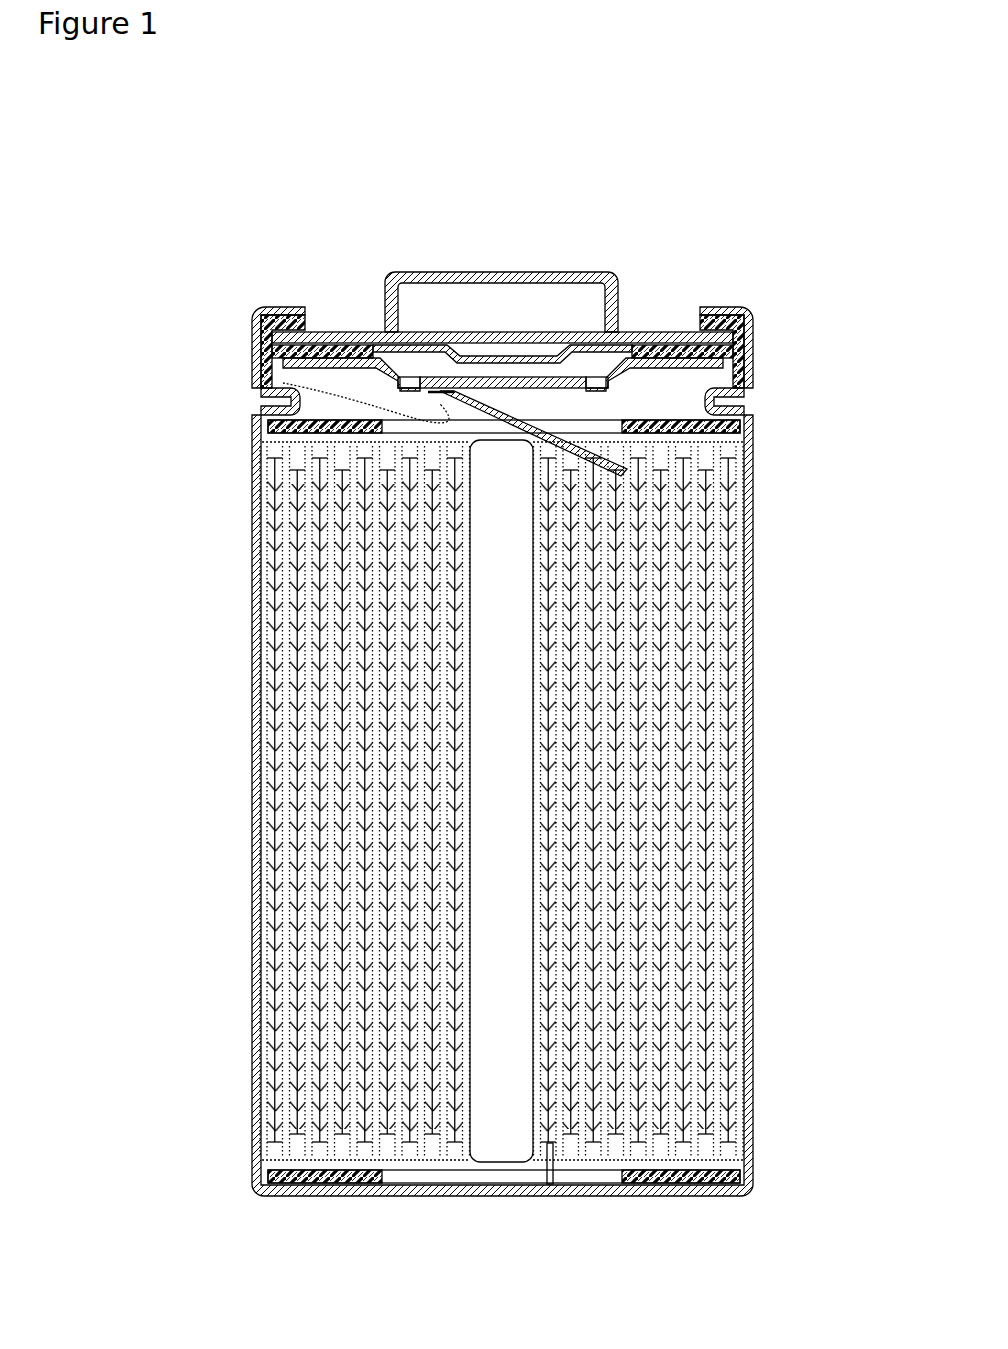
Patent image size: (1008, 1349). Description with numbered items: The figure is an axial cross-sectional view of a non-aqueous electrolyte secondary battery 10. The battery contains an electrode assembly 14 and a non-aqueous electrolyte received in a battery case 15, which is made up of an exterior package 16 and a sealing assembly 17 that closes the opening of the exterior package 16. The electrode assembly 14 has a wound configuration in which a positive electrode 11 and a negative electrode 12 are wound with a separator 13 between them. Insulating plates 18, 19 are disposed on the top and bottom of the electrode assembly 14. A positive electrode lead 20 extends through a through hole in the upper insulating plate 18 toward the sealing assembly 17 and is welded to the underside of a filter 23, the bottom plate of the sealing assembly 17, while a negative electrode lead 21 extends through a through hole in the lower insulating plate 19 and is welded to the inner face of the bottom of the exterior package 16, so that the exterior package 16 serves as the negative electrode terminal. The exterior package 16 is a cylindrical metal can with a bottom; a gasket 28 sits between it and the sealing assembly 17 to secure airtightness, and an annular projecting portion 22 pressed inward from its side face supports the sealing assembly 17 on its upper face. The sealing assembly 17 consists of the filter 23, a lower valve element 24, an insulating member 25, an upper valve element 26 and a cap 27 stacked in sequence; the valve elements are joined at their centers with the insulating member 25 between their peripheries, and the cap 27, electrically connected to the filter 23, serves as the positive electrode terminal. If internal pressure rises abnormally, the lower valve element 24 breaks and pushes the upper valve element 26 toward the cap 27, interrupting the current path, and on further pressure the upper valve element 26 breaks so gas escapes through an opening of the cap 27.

The non-aqueous electrolyte secondary battery 10 is at (762, 306).
The positive electrode 11 is at (745, 870).
The negative electrode 12 is at (745, 900).
The separator 13 is at (745, 935).
The electrode assembly 14 is at (830, 862).
The battery case 15 is at (638, 224).
The exterior package 16 is at (718, 307).
The sealing assembly 17 is at (648, 345).
The insulating plate 18 is at (748, 430).
The insulating plate 19 is at (752, 1178).
The positive electrode lead 20 is at (272, 384).
The negative electrode lead 21 is at (568, 1184).
The projecting portion 22 is at (285, 402).
The filter 23 is at (507, 377).
The lower valve element 24 is at (400, 345).
The insulating member 25 is at (337, 332).
The upper valve element 26 is at (420, 358).
The cap 27 is at (578, 272).
The gasket 28 is at (755, 328).